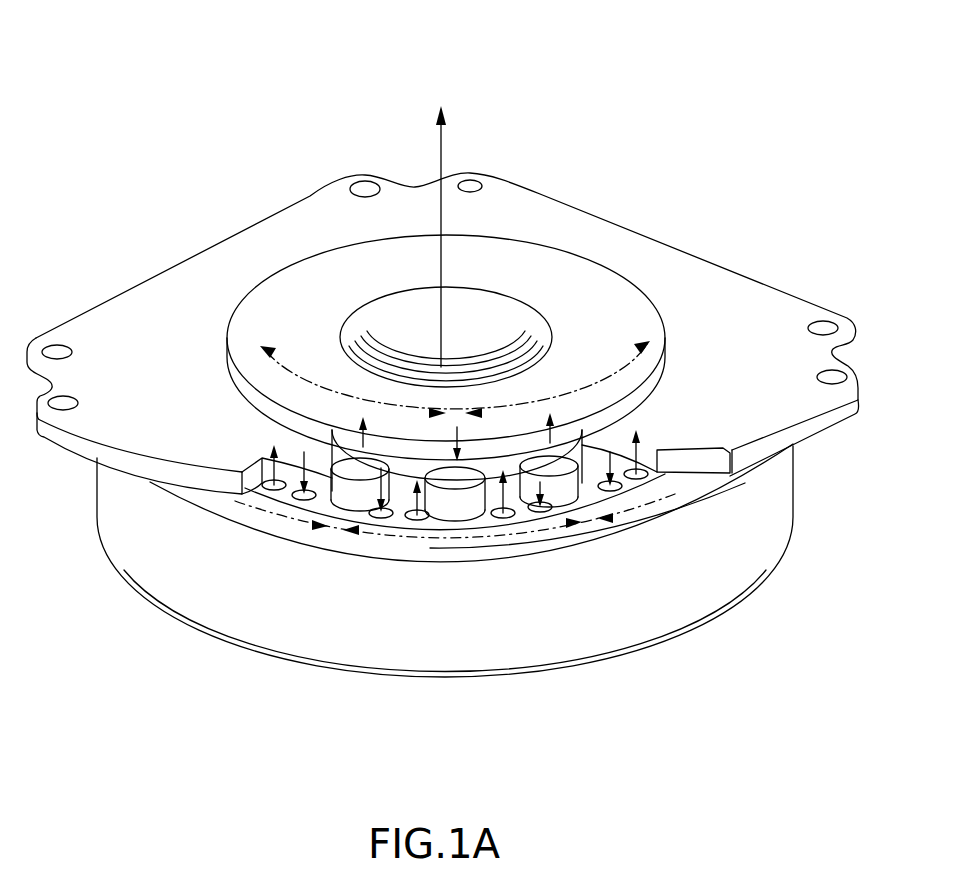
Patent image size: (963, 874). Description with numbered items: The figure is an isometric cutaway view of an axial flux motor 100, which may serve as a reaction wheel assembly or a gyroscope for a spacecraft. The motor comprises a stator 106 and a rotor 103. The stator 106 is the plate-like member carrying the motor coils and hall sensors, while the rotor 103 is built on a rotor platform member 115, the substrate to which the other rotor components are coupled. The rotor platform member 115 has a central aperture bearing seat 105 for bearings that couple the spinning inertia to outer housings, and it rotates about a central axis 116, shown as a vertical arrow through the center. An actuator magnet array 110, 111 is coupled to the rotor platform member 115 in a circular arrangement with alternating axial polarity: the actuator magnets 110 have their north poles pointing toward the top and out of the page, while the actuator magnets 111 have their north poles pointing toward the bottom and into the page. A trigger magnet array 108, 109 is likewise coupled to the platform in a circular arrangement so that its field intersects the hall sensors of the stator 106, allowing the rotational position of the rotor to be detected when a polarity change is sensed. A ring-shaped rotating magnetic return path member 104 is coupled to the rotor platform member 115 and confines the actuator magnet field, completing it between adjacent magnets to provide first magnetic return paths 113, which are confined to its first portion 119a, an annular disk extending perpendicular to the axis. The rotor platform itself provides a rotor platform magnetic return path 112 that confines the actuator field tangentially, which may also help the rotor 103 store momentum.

The axial flux motor 100 is at (103, 71).
The rotor 103 is at (124, 552).
The rotating magnetic return path member 104 is at (612, 291).
The central aperture bearing seat 105 is at (503, 305).
The stator 106 is at (160, 302).
The trigger magnet array (first polarity magnets) 108 is at (272, 488).
The trigger magnet array (second polarity magnets) 109 is at (373, 515).
The actuator magnets (north pole up) 110 is at (454, 482).
The actuator magnets (north pole down) 111 is at (455, 493).
The rotor platform magnetic return path 112 is at (390, 535).
The first magnetic return path 113 is at (393, 408).
The rotor platform member 115 is at (110, 502).
The central axis 116 is at (447, 155).
The first portion of rotating magnetic return path member 119a is at (303, 265).